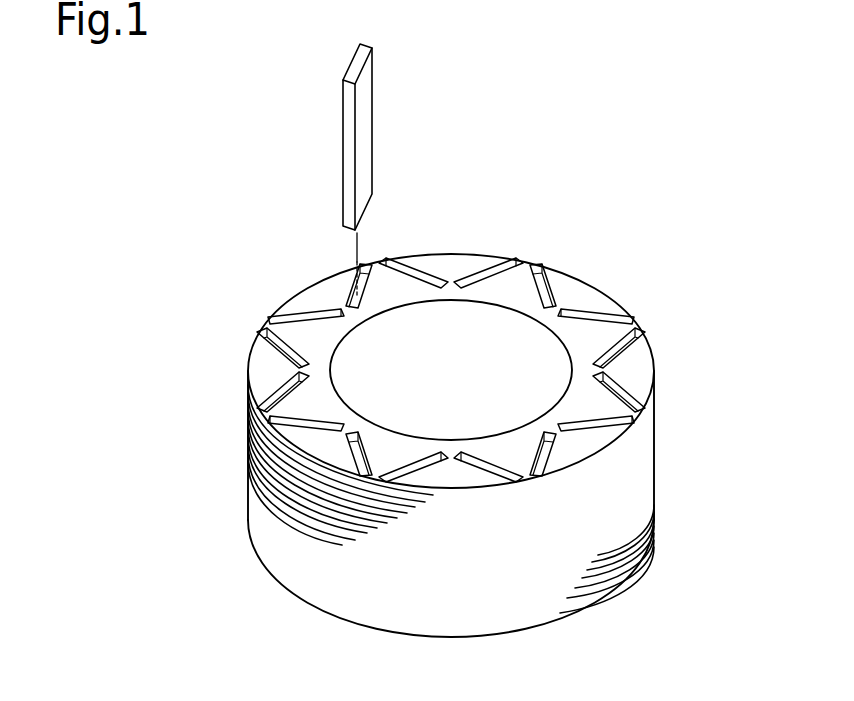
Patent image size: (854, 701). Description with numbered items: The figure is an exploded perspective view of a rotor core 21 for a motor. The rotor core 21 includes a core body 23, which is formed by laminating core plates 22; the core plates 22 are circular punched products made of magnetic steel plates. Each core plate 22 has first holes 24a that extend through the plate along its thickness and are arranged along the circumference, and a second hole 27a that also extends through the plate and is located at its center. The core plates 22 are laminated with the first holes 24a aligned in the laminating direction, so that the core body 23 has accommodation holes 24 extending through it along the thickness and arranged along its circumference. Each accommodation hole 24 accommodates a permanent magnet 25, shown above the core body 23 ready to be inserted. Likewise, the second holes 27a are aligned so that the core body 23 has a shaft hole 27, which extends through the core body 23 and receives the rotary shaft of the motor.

The rotor core 21 is at (540, 255).
The core plates 22 is at (248, 432).
The core body 23 is at (657, 432).
The accommodation holes 24 is at (473, 372).
The first holes 24a is at (296, 316).
The permanent magnet 25 is at (367, 110).
The shaft hole 27 is at (451, 370).
The second hole 27a is at (503, 365).